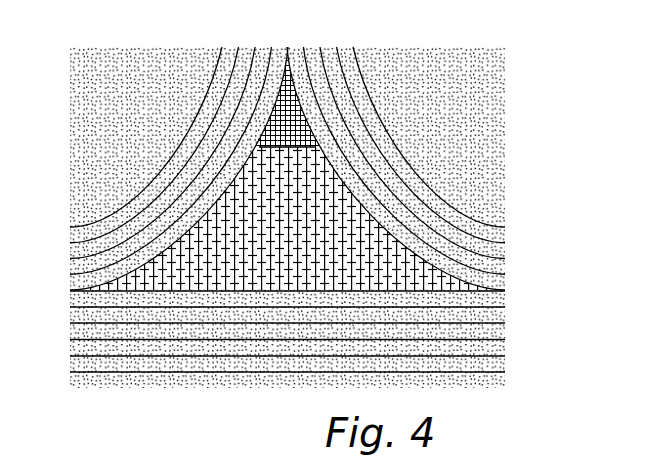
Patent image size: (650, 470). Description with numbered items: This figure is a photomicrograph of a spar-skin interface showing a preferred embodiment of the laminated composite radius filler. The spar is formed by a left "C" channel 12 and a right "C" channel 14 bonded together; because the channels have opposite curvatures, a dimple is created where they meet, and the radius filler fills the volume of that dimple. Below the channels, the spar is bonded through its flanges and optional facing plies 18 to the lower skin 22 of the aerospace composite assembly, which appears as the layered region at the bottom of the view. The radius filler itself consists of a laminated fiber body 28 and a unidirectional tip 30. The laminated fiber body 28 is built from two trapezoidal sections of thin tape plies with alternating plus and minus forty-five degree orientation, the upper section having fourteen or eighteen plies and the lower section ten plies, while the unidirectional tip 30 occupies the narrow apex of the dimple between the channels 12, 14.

The left "C" channel 12 is at (127, 232).
The right "C" channel 14 is at (462, 218).
The facing plies 18 is at (350, 331).
The lower skin 22 is at (488, 349).
The laminated fiber body 28 is at (256, 258).
The unidirectional tip 30 is at (291, 110).